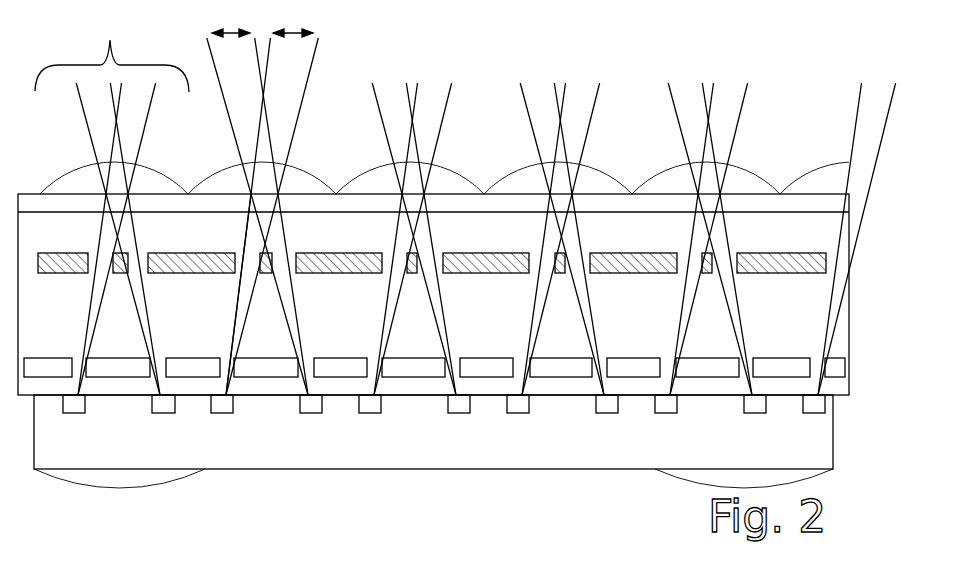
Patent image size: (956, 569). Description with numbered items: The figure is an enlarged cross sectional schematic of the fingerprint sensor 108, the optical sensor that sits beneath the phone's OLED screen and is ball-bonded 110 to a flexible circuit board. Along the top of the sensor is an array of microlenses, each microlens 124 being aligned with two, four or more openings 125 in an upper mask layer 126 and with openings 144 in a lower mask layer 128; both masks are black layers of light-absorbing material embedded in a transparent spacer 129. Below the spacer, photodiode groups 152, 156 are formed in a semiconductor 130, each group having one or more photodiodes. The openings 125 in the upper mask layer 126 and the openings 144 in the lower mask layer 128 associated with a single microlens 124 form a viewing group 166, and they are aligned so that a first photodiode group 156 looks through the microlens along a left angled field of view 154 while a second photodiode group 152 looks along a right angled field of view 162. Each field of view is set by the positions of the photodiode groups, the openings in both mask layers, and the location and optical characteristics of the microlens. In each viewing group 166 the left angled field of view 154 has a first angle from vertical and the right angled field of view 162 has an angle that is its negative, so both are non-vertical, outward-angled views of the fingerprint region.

The fingerprint sensor 108 is at (740, 88).
The ball bond 110 is at (100, 487).
The microlens 124 is at (243, 178).
The openings in upper mask layer 125 is at (253, 240).
The upper mask layer 126 is at (150, 268).
The lower mask layer 128 is at (417, 355).
The transparent spacer 129 is at (482, 246).
The semiconductor 130 is at (385, 455).
The openings in lower mask layer 144 is at (238, 355).
The second photodiode group 152 is at (217, 408).
The left angled field of view 154 is at (232, 21).
The first photodiode group 156 is at (312, 408).
The right angled field of view 162 is at (293, 21).
The viewing group 166 is at (112, 203).